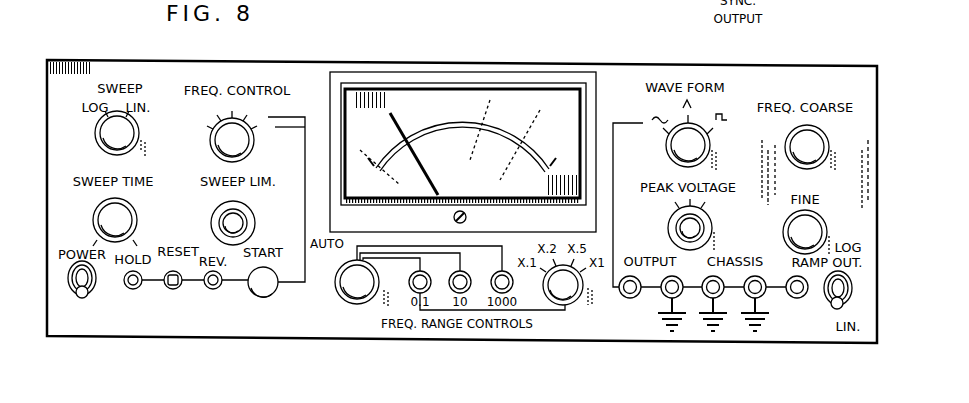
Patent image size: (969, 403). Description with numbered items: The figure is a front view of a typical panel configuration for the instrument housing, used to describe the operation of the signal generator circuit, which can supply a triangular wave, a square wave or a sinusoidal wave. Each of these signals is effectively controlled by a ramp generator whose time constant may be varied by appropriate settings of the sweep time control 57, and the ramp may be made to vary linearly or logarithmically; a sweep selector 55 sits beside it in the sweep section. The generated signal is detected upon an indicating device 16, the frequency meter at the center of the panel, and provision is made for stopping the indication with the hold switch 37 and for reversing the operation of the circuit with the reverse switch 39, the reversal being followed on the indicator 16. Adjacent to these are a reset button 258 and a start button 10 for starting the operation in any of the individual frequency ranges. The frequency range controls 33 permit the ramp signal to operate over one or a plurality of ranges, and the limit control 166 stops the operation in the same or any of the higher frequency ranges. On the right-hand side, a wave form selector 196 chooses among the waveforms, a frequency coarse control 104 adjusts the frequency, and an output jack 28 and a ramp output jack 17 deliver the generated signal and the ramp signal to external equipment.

The sweep log/lin control knob 55 is at (122, 136).
The control 57 is at (121, 219).
The switch 37 is at (129, 289).
The reset button 258 is at (170, 289).
The switch 39 is at (212, 289).
The start button 10 is at (270, 294).
The indicating device 16 is at (478, 82).
The frequency range controls 33 is at (463, 320).
The limit control 166 is at (571, 293).
The wave form selector knob 196 is at (703, 143).
The frequency coarse control knob 104 is at (820, 142).
The output jack 28 is at (630, 298).
The ramp output jack 17 is at (797, 298).